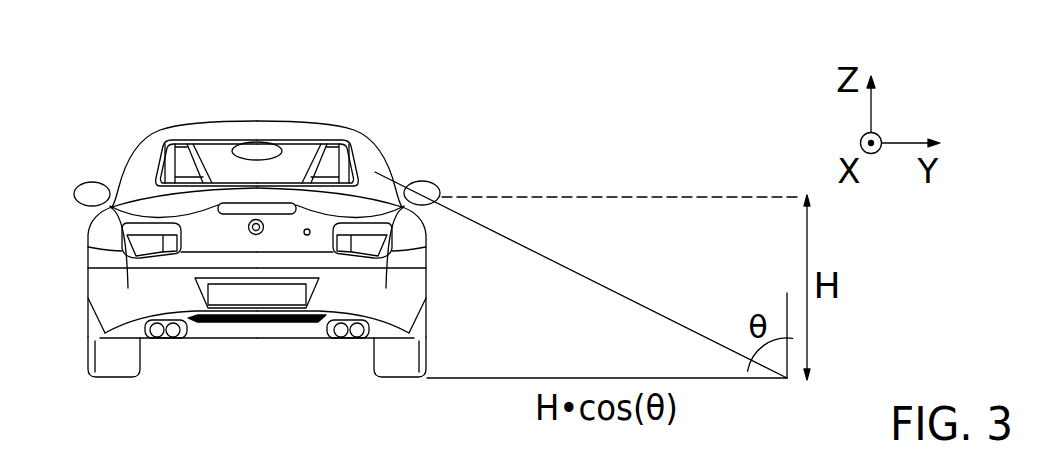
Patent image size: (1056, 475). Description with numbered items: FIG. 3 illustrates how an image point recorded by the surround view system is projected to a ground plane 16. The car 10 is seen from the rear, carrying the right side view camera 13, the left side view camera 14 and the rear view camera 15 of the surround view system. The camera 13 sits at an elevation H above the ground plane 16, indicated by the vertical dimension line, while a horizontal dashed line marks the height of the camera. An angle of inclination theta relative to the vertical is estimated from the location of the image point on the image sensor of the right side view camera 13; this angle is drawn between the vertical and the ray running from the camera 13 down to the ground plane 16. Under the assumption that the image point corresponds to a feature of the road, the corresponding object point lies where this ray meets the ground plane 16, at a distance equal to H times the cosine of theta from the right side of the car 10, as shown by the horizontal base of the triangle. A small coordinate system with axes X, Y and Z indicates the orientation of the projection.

The car 10 is at (257, 122).
The right side view camera 13 is at (402, 186).
The left side view camera 14 is at (112, 187).
The rear view camera 15 is at (275, 214).
The ground plane 16 is at (505, 378).